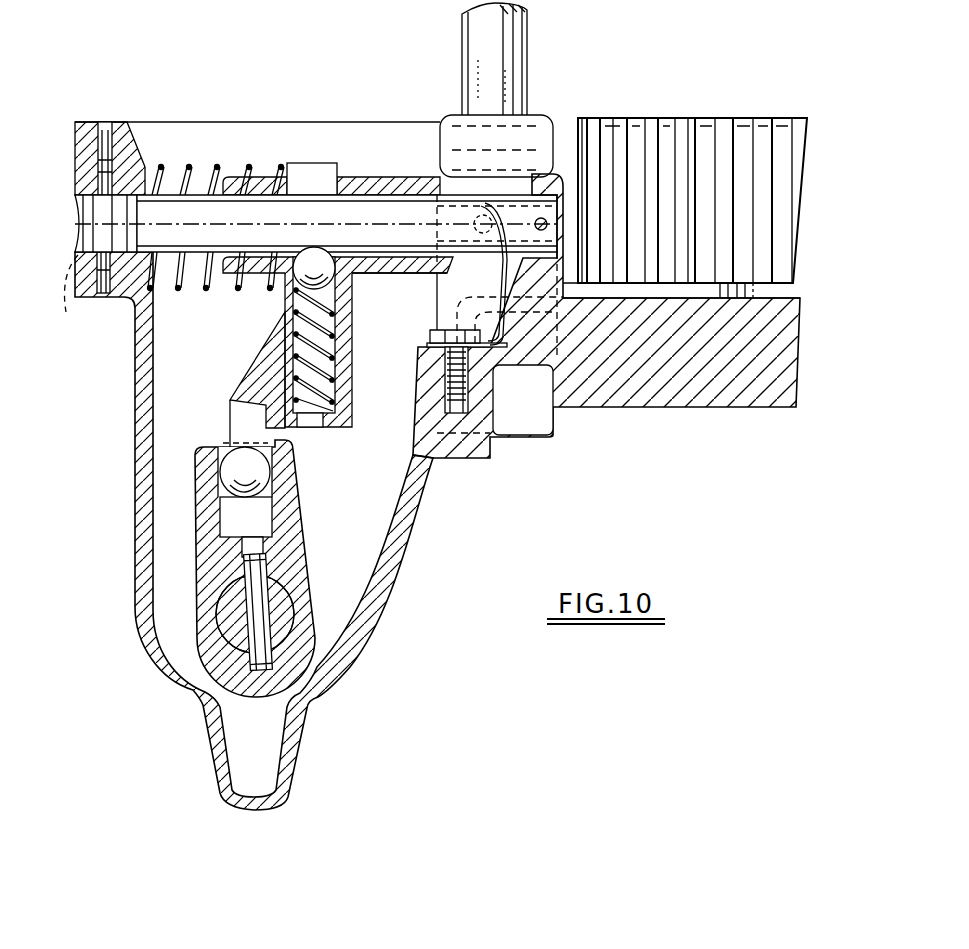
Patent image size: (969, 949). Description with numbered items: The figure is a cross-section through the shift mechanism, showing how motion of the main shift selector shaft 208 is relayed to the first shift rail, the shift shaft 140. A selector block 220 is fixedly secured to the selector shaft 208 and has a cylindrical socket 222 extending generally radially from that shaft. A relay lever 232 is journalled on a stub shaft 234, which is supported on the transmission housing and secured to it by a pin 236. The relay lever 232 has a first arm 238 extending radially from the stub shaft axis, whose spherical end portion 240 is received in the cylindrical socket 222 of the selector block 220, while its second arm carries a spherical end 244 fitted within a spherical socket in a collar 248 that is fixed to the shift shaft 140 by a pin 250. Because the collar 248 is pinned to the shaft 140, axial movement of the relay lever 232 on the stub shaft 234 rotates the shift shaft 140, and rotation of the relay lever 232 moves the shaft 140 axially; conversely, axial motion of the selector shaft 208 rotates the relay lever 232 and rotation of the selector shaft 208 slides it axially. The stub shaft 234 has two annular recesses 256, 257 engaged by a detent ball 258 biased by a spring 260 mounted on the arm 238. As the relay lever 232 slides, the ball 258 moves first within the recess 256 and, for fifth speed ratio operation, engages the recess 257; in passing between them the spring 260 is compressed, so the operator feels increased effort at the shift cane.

The shift shaft 140 is at (528, 42).
The collar 248 is at (541, 125).
The pin 250 is at (440, 158).
The stub shaft 234 is at (187, 195).
The relay lever 232 is at (351, 180).
The spherical end 244 is at (491, 213).
The ball 258 is at (310, 249).
The pin 236 is at (89, 229).
The annular recess 257 is at (378, 271).
The annular recess 256 is at (365, 285).
The spring 260 is at (337, 357).
The first arm 238 is at (237, 403).
The spherical end portion 240 is at (237, 458).
The cylindrical socket 222 is at (295, 492).
The selector block 220 is at (296, 540).
The main shift selector shaft 208 is at (278, 598).